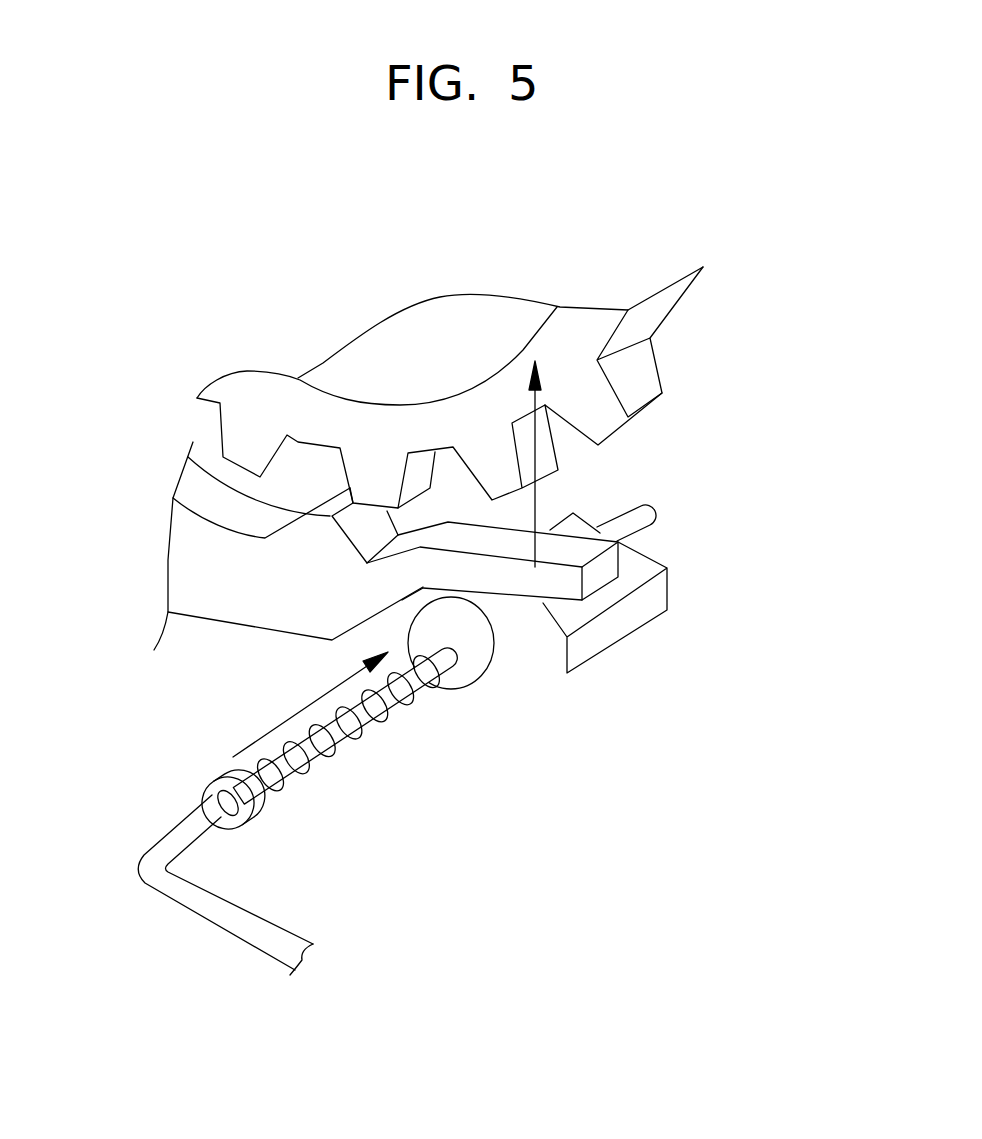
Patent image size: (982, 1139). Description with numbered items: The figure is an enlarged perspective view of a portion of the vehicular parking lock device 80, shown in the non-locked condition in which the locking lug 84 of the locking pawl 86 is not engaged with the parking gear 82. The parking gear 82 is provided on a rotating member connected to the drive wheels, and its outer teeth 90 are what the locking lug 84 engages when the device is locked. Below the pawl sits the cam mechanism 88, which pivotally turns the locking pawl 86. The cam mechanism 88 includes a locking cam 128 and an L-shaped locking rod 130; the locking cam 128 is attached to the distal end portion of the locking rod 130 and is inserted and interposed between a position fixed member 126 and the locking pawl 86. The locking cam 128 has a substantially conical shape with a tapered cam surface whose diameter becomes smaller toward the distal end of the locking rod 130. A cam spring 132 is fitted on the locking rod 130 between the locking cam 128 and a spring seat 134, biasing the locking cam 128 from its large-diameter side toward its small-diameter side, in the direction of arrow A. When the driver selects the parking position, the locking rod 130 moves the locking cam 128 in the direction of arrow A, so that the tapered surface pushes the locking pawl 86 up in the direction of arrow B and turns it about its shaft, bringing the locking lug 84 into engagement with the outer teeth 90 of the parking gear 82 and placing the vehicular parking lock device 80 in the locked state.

The vehicular parking lock device 80 is at (113, 343).
The parking gear 82 is at (718, 347).
The locking lug 84 is at (313, 528).
The locking pawl 86 is at (213, 648).
The cam mechanism 88 is at (742, 533).
The outer teeth 90 is at (597, 418).
The position fixed member 126 is at (590, 637).
The locking cam 128 is at (510, 625).
The locking rod 130 is at (198, 900).
The cam spring 132 is at (328, 753).
The spring seat 134 is at (242, 818).